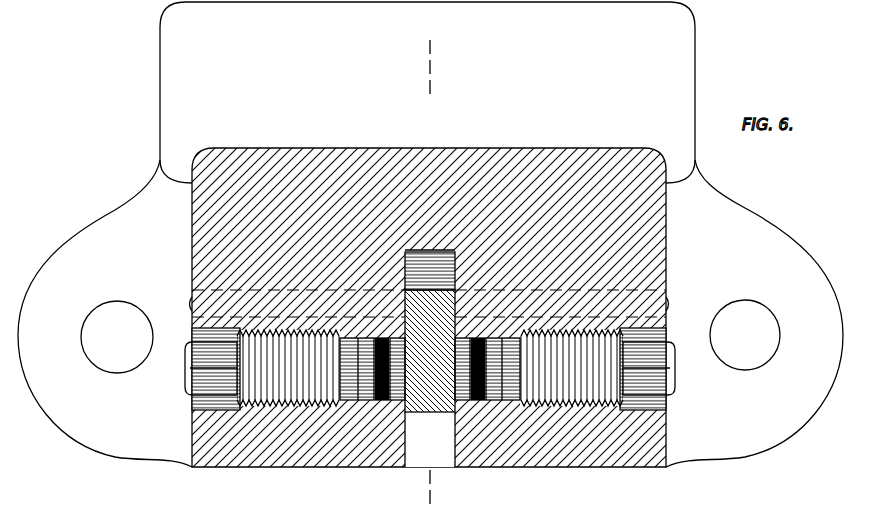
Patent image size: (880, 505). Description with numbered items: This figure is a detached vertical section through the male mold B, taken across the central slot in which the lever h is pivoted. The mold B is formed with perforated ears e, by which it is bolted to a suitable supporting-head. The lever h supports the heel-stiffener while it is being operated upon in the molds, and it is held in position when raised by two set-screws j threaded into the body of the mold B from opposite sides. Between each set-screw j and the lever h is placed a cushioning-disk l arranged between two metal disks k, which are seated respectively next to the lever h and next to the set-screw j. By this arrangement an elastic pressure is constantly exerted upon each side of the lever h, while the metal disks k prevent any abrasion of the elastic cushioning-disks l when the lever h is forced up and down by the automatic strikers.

The mold B is at (650, 237).
The perforated ears e is at (430, 313).
The set-screws j is at (430, 368).
The cushioning-disk l is at (381, 334).
The metal disks k is at (366, 408).
The lever h is at (418, 416).